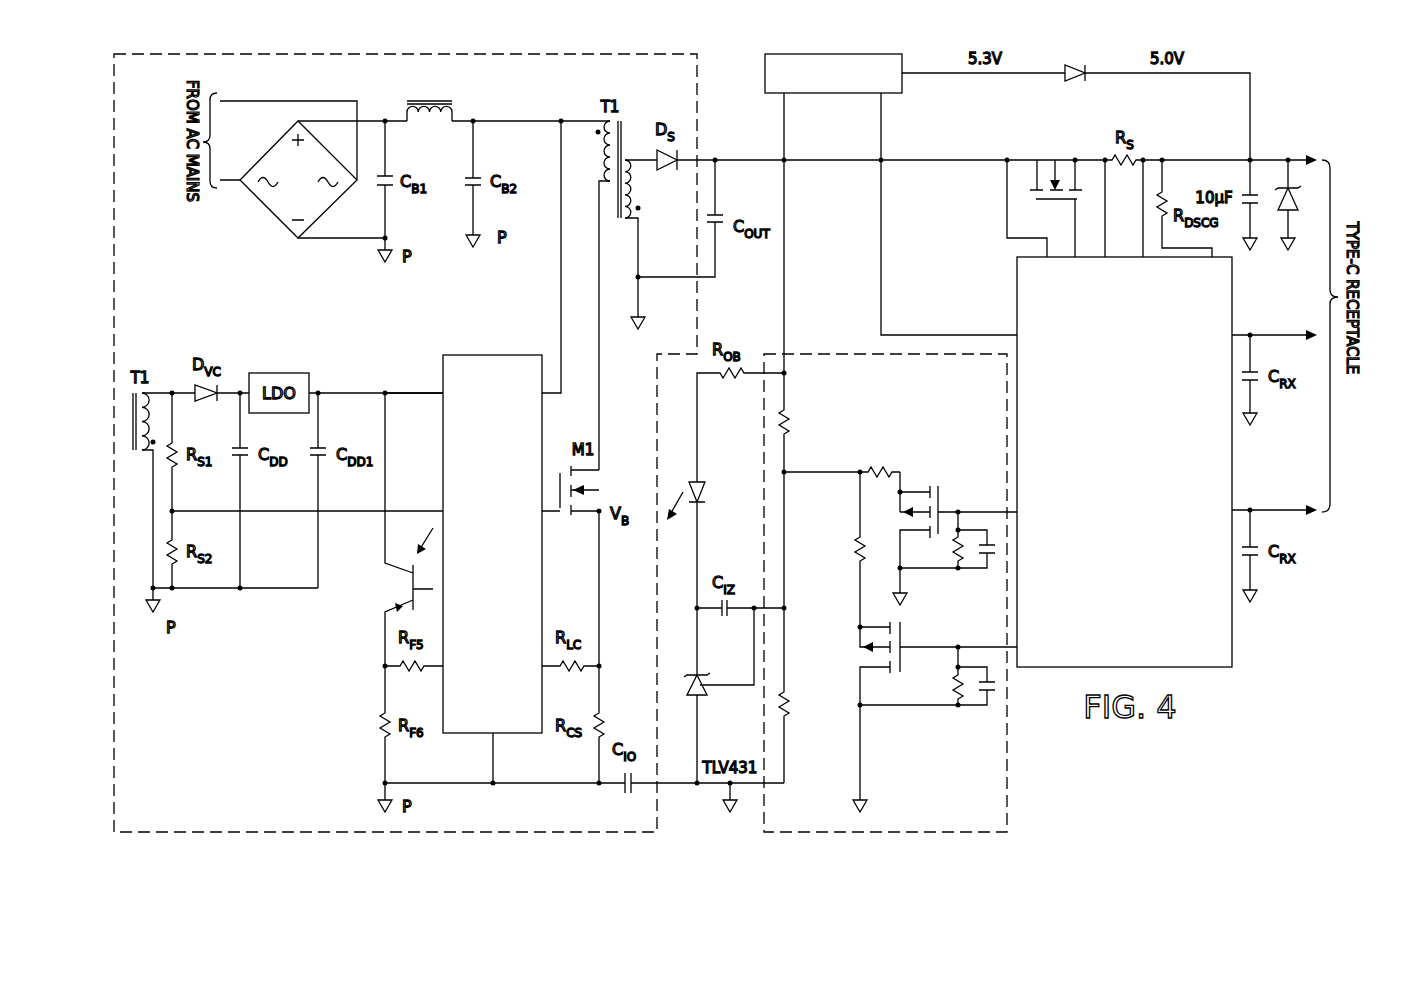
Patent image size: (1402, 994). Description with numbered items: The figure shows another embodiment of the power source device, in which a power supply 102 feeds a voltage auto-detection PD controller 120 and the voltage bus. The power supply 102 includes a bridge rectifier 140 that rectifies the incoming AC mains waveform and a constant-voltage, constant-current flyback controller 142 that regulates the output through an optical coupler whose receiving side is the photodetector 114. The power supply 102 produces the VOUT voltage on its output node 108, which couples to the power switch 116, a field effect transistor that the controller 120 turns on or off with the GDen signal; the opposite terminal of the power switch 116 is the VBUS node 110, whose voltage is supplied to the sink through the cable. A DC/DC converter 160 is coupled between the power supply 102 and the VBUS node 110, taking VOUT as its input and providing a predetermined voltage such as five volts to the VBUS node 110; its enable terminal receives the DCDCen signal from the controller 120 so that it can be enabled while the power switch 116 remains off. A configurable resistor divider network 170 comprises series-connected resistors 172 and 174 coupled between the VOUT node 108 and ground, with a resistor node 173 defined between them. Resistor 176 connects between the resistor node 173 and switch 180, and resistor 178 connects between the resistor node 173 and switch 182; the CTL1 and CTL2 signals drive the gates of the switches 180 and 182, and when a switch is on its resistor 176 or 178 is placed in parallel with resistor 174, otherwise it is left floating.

The power supply 102 is at (232, 777).
The output node 108 is at (823, 162).
The VBUS node 110 is at (1195, 158).
The photodetector 114 is at (377, 607).
The power switch 116 is at (1040, 212).
The voltage auto-detection PD controller 120 is at (1105, 522).
The bridge rectifier 140 is at (268, 211).
The flyback controller 142 is at (510, 604).
The DC/DC converter 160 is at (903, 84).
The configurable resistor divider network 170 is at (917, 777).
The resistor 172 is at (790, 422).
The resistor node 173 is at (787, 463).
The resistor 174 is at (790, 704).
The resistor 176 is at (880, 470).
The resistor 178 is at (856, 550).
The switch 180 is at (943, 496).
The switch 182 is at (905, 637).